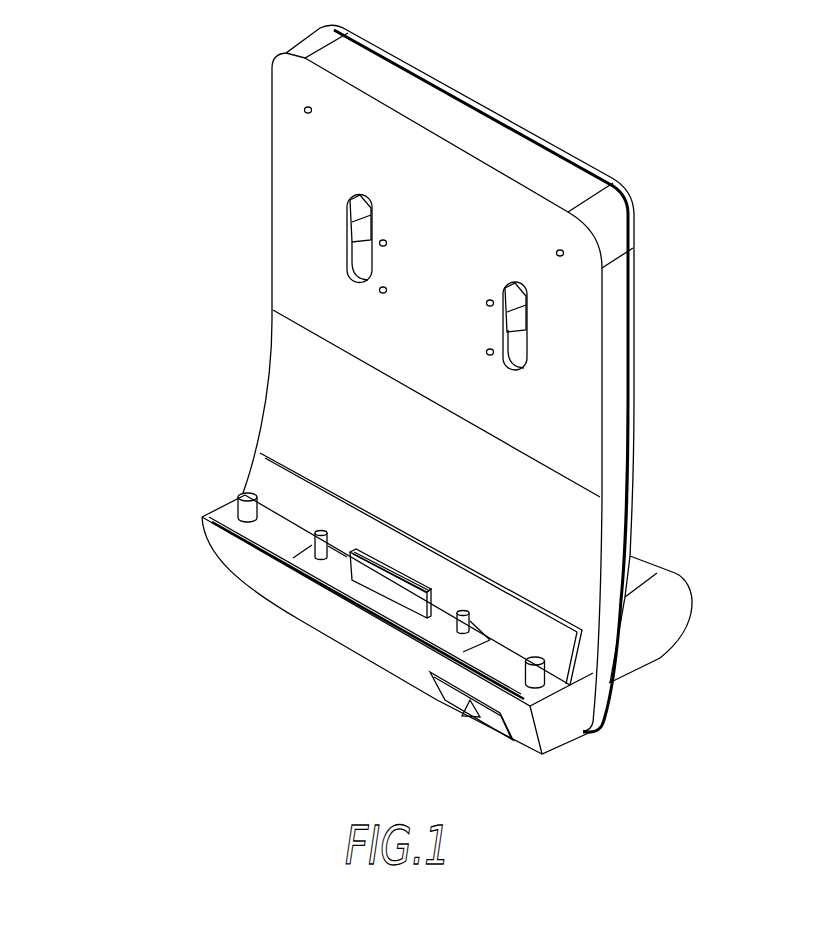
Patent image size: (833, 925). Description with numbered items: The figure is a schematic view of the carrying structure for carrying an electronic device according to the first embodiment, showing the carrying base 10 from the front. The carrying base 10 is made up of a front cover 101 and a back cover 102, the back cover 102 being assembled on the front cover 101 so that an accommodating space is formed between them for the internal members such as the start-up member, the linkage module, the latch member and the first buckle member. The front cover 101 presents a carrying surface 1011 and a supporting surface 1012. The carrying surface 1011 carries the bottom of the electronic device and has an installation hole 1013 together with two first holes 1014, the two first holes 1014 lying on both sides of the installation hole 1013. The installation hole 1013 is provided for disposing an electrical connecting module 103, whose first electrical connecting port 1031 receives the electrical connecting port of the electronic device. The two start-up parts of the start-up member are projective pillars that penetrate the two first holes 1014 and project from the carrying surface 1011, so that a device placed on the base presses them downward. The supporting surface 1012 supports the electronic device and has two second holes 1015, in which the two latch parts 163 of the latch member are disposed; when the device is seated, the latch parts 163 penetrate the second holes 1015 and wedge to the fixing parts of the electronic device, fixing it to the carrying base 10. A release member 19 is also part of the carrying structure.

The carrying base 10 is at (182, 567).
The front cover 101 is at (258, 388).
The supporting surface 1012 is at (305, 265).
The second holes 1015 is at (511, 287).
The latch parts 163 is at (358, 228).
The back cover 102 is at (638, 550).
The carrying surface 1011 is at (272, 536).
The first holes 1014 is at (234, 504).
The electrical connecting module 103 is at (308, 548).
The installation hole 1013 is at (383, 596).
The first electrical connecting port 1031 is at (426, 595).
The release member 19 is at (477, 723).